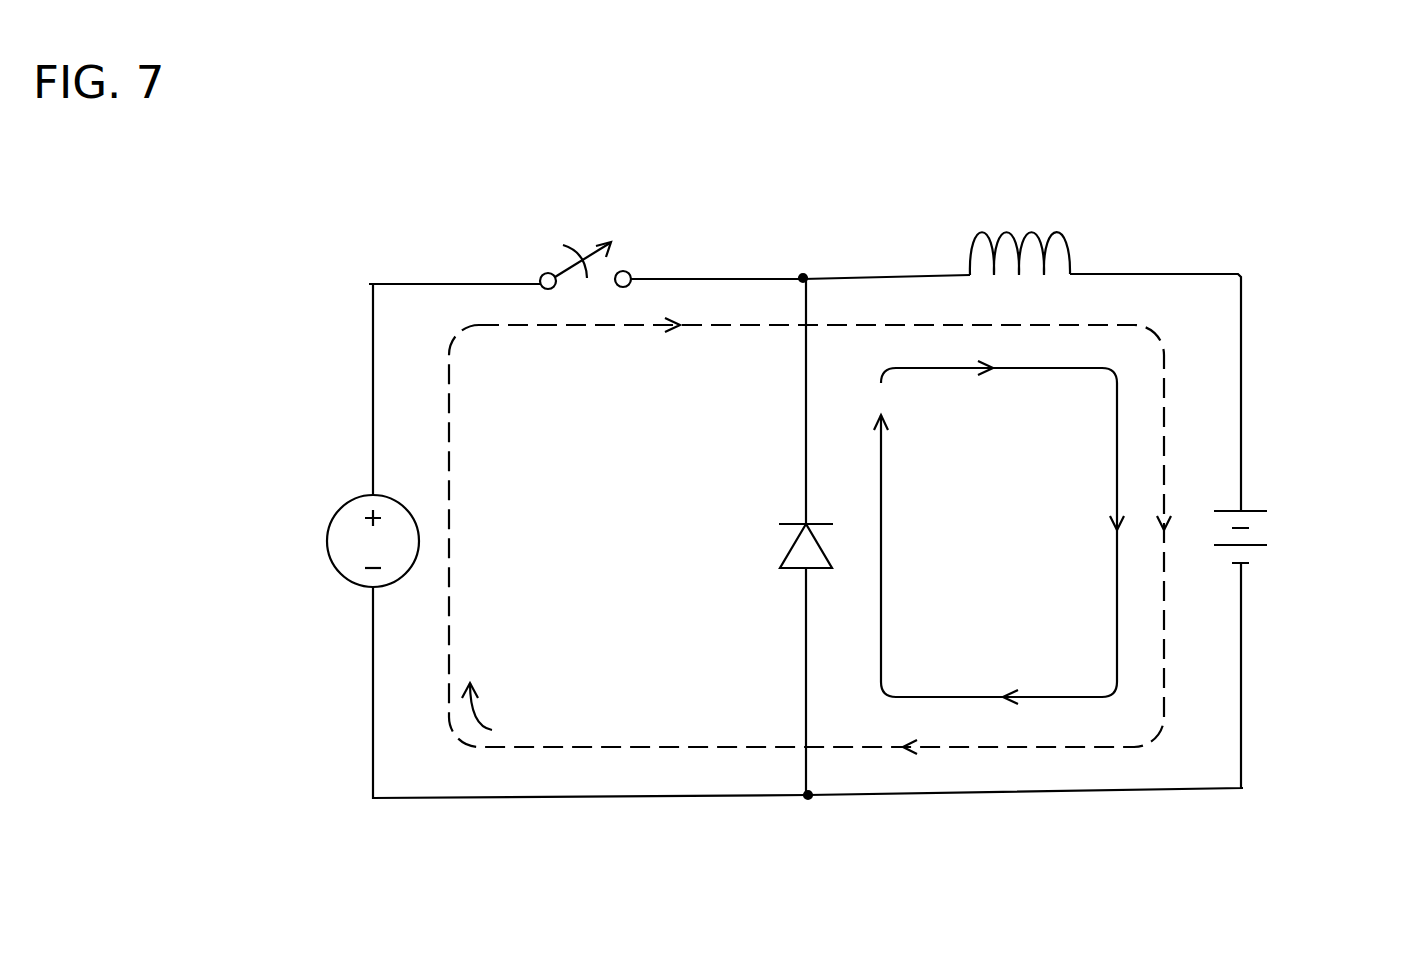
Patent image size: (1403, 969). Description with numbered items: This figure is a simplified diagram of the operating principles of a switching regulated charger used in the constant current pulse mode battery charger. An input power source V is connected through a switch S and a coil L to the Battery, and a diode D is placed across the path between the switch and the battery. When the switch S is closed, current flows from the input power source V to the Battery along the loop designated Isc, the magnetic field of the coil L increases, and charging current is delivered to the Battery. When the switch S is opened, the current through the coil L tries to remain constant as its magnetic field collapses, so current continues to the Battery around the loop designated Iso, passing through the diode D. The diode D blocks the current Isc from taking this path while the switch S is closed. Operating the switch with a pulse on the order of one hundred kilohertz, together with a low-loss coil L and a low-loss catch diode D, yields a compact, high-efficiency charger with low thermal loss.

The switch S is at (582, 249).
The coil L is at (1020, 235).
The diode D is at (781, 546).
The input power source V is at (373, 541).
The battery Battery is at (1302, 530).
The switch-open current loop Iso is at (999, 532).
The switch-closed current flow Isc is at (810, 536).